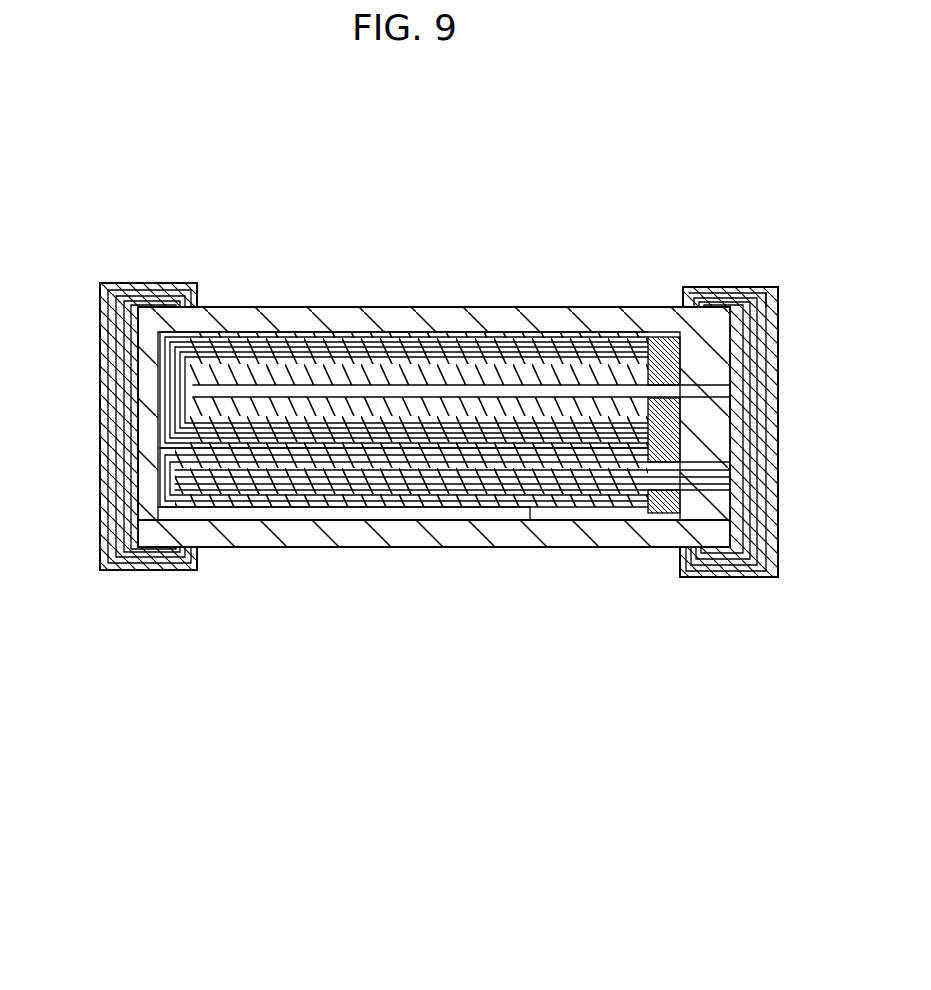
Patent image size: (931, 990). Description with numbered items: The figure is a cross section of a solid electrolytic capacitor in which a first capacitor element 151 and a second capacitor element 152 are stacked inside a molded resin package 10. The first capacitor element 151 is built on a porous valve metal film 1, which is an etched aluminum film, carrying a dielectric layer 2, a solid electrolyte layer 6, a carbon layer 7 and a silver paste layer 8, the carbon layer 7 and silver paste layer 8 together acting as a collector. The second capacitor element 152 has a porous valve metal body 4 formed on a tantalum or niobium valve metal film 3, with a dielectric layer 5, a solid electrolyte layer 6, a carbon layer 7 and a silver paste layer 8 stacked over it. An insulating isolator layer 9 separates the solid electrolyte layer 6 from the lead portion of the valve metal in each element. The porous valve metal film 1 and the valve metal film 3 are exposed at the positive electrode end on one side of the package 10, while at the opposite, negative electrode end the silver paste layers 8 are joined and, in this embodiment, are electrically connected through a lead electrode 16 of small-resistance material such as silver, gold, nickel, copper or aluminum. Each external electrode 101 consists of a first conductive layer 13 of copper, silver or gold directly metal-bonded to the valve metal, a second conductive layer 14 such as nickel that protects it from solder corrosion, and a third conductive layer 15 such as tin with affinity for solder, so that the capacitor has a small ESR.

The porous valve metal film 1 is at (338, 510).
The dielectric layer 2 is at (432, 512).
The valve metal film 3 is at (270, 386).
The porous valve metal body 4 is at (345, 372).
The dielectric layer 5 is at (435, 352).
The solid electrolyte layer 6 is at (460, 342).
The carbon layer 7 is at (588, 345).
The silver paste layer 8 is at (528, 342).
The insulating isolator layer 9 is at (654, 340).
The package 10 is at (524, 538).
The first conductive layer 13 is at (135, 524).
The second conductive layer 14 is at (125, 432).
The third conductive layer 15 is at (112, 320).
The lead electrode 16 is at (248, 513).
The external electrode 101 is at (823, 292).
The first capacitor element 151 is at (100, 443).
The second capacitor element 152 is at (100, 340).